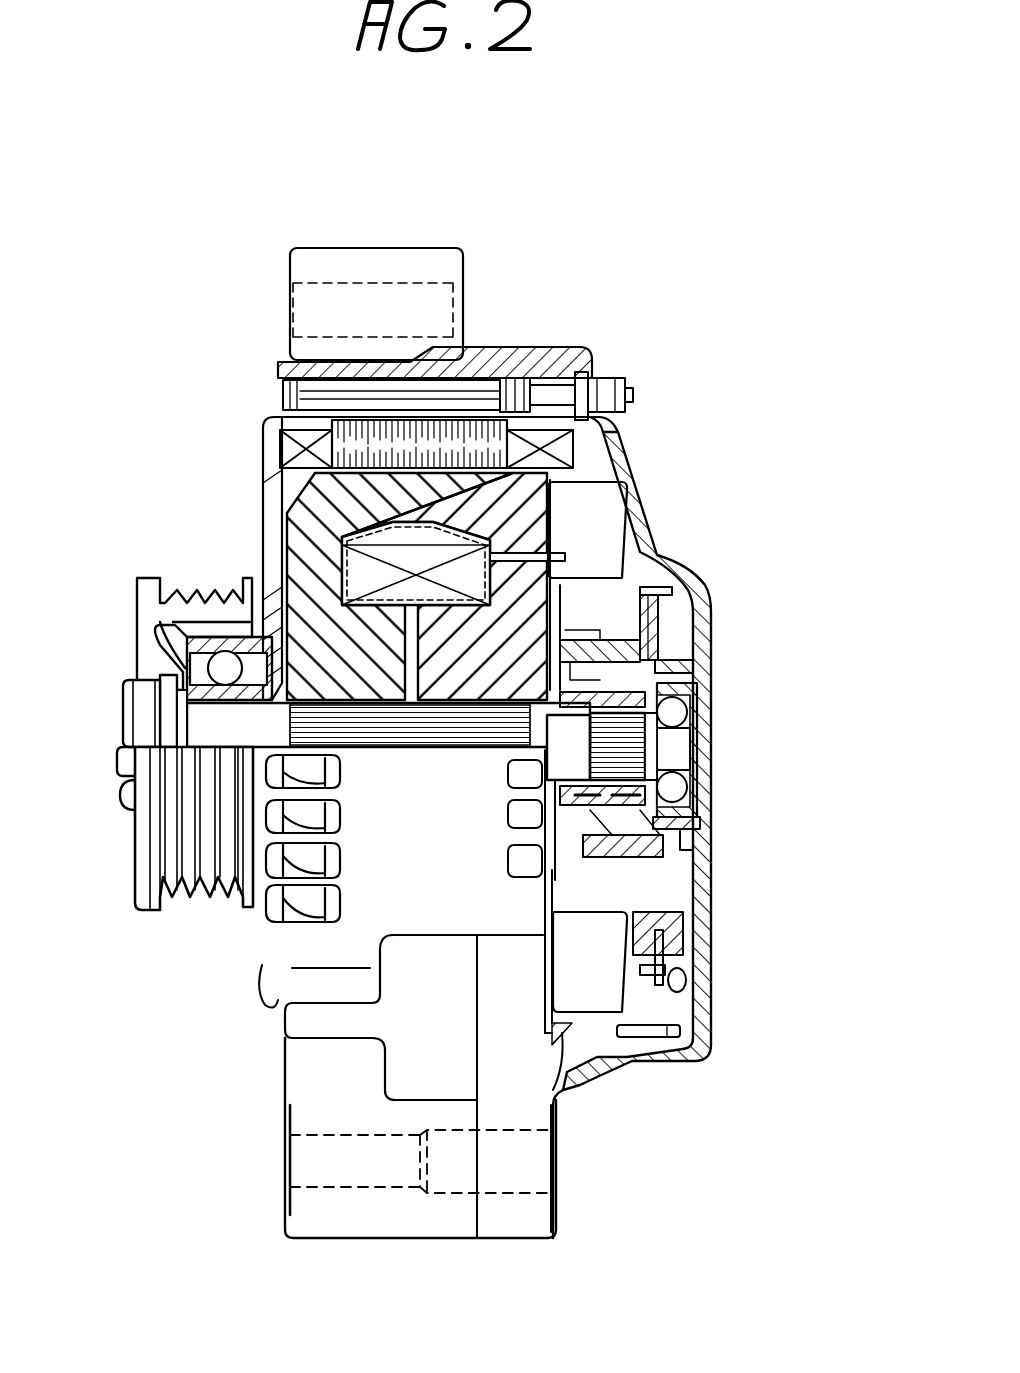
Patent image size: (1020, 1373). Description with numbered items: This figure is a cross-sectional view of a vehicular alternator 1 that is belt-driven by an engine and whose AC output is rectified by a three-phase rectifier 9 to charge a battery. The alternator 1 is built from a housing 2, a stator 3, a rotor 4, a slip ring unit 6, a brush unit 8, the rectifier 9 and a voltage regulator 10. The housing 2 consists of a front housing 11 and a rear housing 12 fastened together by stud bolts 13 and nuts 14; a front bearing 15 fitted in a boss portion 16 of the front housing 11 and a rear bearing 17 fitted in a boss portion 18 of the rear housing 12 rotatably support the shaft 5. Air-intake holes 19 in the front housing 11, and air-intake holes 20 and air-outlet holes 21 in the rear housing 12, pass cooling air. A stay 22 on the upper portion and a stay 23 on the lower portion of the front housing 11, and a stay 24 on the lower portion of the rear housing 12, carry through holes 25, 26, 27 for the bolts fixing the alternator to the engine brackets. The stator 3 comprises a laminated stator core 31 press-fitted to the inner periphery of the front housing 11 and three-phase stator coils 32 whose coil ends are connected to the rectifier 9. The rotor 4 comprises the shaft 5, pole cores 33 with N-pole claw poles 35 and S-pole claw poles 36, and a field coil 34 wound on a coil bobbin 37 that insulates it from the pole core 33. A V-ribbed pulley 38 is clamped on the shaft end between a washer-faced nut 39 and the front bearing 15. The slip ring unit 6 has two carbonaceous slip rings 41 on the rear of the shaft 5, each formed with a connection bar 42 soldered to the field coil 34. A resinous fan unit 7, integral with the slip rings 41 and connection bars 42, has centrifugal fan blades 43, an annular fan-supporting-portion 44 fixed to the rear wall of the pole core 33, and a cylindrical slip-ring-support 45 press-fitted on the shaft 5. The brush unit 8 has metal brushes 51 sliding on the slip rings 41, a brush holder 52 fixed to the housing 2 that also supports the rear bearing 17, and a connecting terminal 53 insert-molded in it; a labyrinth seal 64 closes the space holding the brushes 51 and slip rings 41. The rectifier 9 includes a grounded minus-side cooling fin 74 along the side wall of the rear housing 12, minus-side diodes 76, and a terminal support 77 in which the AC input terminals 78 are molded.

The alternator 1 is at (228, 312).
The housing 2 is at (272, 1020).
The stator 3 is at (298, 479).
The rotor 4 is at (586, 468).
The shaft 5 is at (190, 717).
The slip ring unit 6 is at (690, 858).
The fan unit 7 is at (630, 494).
The brush unit 8 is at (676, 632).
The three-phase rectifier 9 is at (657, 1045).
The voltage regulator 10 is at (662, 590).
The front housing 11 is at (275, 985).
The rear housing 12 is at (588, 1080).
The stud bolts 13 is at (520, 378).
The nuts 14 is at (600, 378).
The front bearing 15 is at (218, 667).
The boss portion 16 is at (213, 623).
The rear bearing 17 is at (676, 787).
The boss portion 18 is at (675, 820).
The air-intake holes 19 is at (270, 520).
The air-intake holes 20 is at (702, 853).
The air-outlet holes 21 is at (520, 862).
The stay 22 is at (365, 256).
The stay 23 is at (320, 1215).
The stay 24 is at (538, 1222).
The through hole 25 is at (322, 305).
The through hole 26 is at (385, 1160).
The through hole 27 is at (497, 1160).
The stator core 31 is at (322, 397).
The three-phase stator coils 32 is at (295, 448).
The pole cores 33 is at (377, 678).
The field coil 34 is at (412, 592).
The claw poles 35 is at (423, 487).
The claw poles 36 is at (473, 517).
The coil bobbin 37 is at (460, 605).
The V-ribbed pulley 38 is at (143, 876).
The washer-faced nut 39 is at (130, 725).
The slip rings 41 is at (627, 817).
The connection bars 42 is at (562, 797).
The centrifugal fan blades 43 is at (608, 537).
The annular fan-supporting-portion 44 is at (537, 935).
The cylindrical slip-ring-support 45 is at (518, 797).
The metal brushes 51 is at (690, 715).
The brush holder 52 is at (712, 660).
The connecting terminal 53 is at (657, 610).
The labyrinth seal 64 is at (582, 660).
The minus-side cooling fin 74 is at (702, 1035).
The minus-side diodes 76 is at (688, 1003).
The terminal support 77 is at (675, 925).
The AC input terminals 78 is at (682, 970).